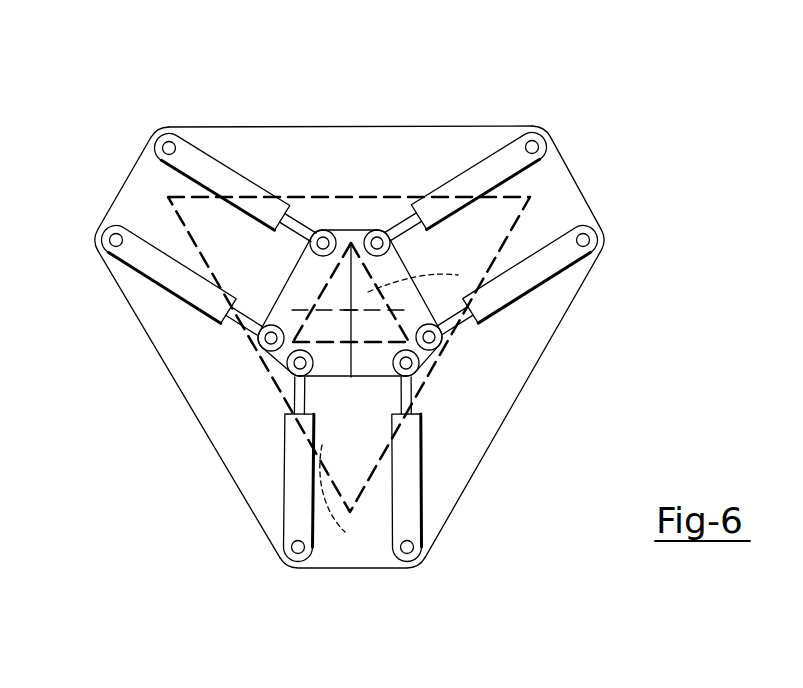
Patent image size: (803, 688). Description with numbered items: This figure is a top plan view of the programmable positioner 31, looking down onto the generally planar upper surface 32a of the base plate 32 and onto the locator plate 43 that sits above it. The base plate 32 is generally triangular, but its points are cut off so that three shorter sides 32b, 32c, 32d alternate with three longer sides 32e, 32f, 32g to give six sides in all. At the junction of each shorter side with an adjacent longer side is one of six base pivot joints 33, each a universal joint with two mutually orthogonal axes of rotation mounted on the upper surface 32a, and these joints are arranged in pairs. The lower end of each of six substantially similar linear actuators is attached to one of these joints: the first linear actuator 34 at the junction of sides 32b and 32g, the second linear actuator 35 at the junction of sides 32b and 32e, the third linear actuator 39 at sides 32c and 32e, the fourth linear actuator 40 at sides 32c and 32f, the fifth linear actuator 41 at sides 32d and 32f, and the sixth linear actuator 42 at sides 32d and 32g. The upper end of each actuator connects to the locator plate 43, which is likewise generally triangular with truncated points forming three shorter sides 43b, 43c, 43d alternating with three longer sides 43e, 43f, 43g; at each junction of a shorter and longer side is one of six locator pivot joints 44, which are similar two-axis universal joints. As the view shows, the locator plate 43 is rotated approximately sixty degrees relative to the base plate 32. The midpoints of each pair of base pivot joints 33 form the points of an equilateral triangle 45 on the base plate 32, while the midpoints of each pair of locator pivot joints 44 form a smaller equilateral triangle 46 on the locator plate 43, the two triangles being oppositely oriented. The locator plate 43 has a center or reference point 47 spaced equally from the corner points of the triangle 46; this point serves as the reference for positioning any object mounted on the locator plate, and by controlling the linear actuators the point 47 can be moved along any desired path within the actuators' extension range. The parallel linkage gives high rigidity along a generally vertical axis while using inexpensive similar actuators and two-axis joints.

The programmable positioner 31 is at (540, 80).
The base plate 32 is at (354, 322).
The upper surface 32a is at (193, 137).
The shorter side 32b is at (348, 570).
The shorter side 32c is at (566, 165).
The shorter side 32d is at (122, 190).
The longer side 32e is at (528, 385).
The longer side 32f is at (365, 126).
The longer side 32g is at (192, 414).
The base pivot joint 33 is at (592, 236).
The first linear actuator 34 is at (275, 522).
The second linear actuator 35 is at (428, 472).
The third linear actuator 39 is at (566, 271).
The fourth linear actuator 40 is at (473, 152).
The fifth linear actuator 41 is at (228, 154).
The sixth linear actuator 42 is at (166, 297).
The locator plate 43 is at (345, 295).
The shorter side 43b is at (445, 381).
The shorter side 43c is at (344, 229).
The shorter side 43d is at (286, 371).
The longer side 43e is at (412, 268).
The longer side 43f is at (274, 300).
The longer side 43g is at (326, 382).
The locator pivot joint 44 is at (320, 232).
The equilateral triangle 45 is at (346, 499).
The smaller equilateral triangle 46 is at (417, 276).
The center or reference point 47 is at (350, 310).